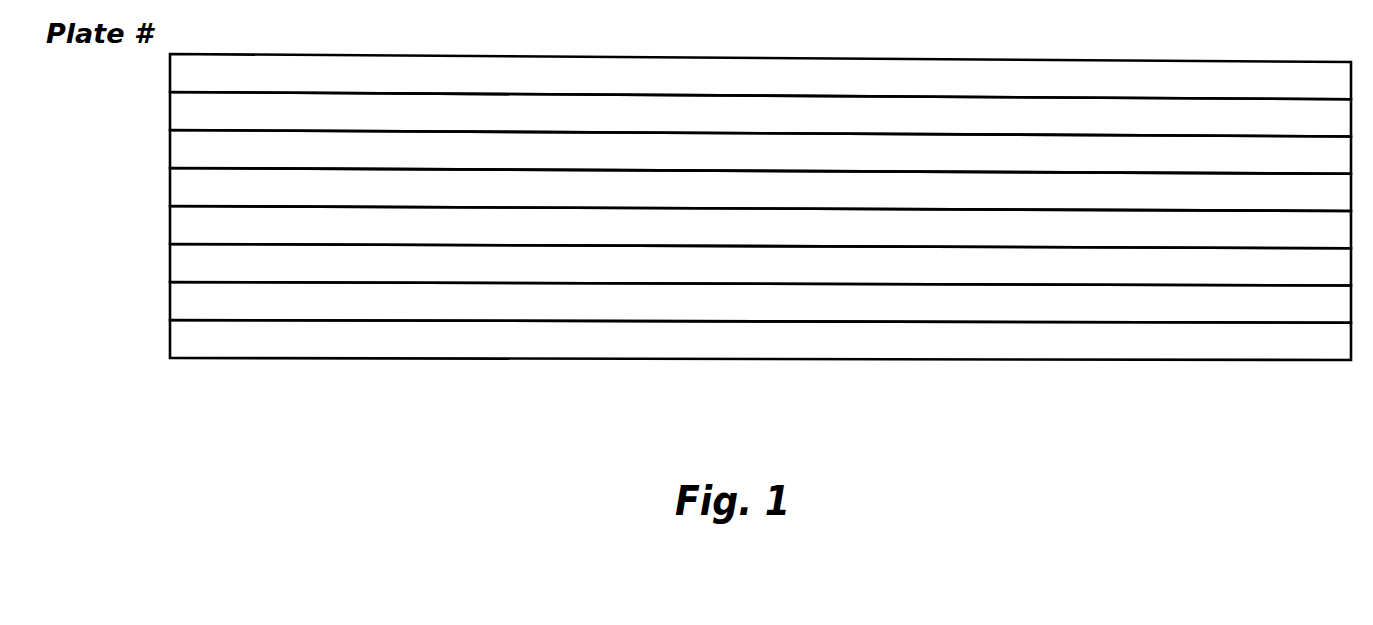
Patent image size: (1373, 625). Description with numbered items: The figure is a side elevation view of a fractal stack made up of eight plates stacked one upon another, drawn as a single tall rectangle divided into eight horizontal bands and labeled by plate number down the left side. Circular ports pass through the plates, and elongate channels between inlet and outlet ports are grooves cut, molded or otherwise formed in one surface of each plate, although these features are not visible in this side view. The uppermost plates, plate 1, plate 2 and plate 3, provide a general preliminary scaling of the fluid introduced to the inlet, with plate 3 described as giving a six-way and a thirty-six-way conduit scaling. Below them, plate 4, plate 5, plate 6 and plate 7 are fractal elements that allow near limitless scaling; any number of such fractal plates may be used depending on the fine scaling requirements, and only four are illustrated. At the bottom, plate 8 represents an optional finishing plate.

The plate 1 is at (734, 76).
The plate 2 is at (733, 114).
The plate 3 is at (733, 152).
The plate 4 is at (732, 189).
The plate 5 is at (733, 227).
The plate 6 is at (733, 265).
The plate 7 is at (733, 302).
The plate 8 is at (733, 340).